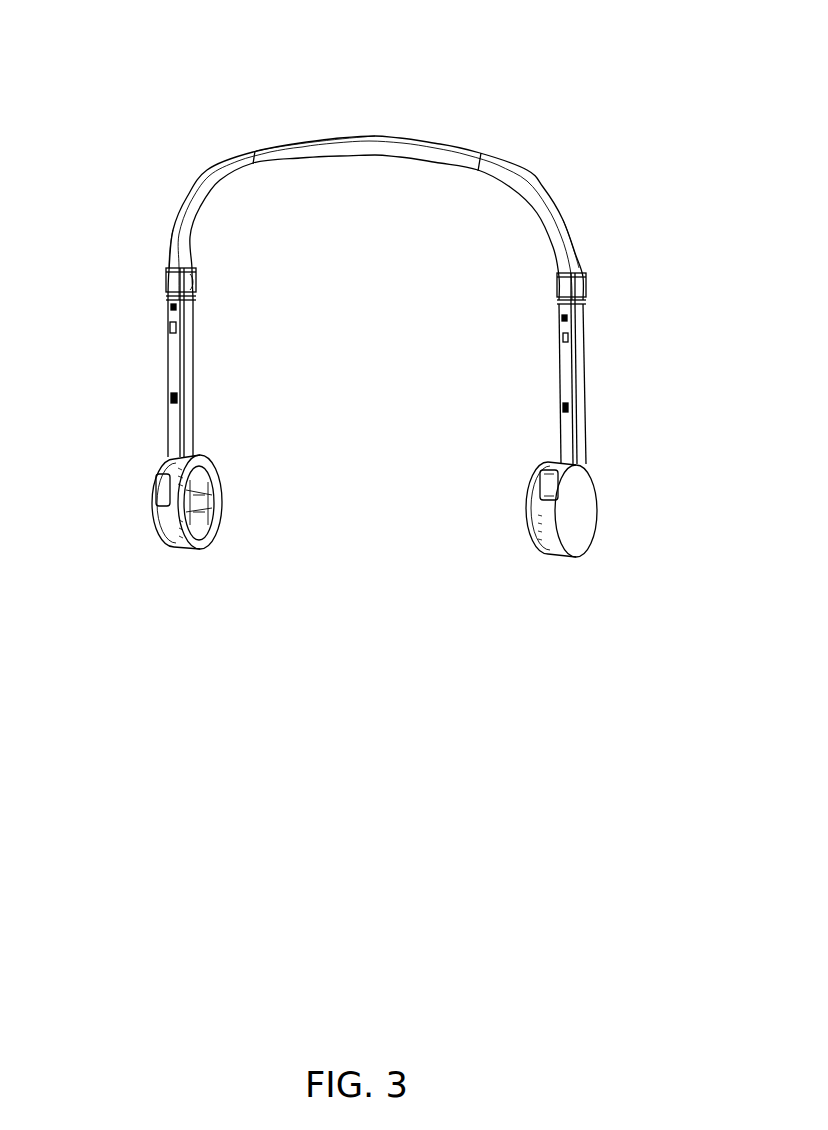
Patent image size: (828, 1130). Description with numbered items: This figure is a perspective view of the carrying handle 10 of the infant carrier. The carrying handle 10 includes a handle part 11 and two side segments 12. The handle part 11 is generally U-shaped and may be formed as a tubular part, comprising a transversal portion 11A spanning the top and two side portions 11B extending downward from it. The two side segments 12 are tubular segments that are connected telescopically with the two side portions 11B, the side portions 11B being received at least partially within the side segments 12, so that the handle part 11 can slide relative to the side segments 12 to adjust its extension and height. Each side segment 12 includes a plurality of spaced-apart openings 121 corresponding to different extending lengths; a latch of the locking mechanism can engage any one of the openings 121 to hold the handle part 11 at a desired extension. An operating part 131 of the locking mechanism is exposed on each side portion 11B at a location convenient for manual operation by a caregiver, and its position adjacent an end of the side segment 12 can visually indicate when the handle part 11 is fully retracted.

The carrying handle 10 is at (84, 31).
The handle part 11 is at (186, 197).
The transversal portion 11A is at (395, 137).
The side portions 11B is at (176, 253).
The side segments 12 is at (173, 432).
The openings 121 is at (170, 327).
The operating part 131 is at (173, 279).